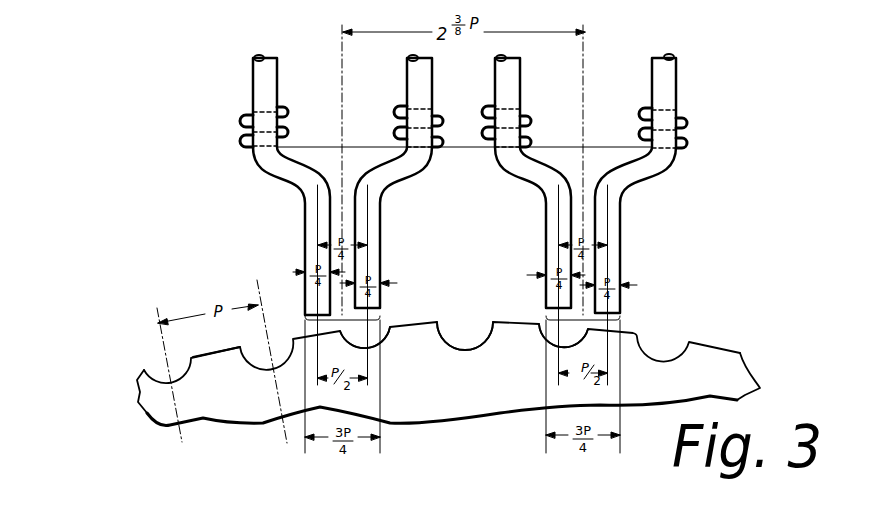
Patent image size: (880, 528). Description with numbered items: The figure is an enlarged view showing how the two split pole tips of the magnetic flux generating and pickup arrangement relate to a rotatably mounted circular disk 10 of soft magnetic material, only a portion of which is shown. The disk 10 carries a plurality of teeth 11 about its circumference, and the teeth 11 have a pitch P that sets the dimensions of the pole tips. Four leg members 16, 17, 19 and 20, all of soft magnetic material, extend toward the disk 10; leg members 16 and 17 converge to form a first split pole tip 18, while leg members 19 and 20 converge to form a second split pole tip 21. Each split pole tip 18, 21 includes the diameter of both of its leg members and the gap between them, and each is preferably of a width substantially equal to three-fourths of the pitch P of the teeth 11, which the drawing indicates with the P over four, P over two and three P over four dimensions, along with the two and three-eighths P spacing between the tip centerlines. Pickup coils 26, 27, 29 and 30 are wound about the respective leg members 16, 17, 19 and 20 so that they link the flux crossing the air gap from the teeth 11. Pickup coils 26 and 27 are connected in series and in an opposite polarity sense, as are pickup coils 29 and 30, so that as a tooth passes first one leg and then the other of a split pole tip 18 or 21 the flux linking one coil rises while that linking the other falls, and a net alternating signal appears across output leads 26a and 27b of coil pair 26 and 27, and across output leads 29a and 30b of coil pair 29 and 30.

The rotatably mounted circular disk 10 is at (705, 362).
The teeth 11 is at (208, 352).
The leg member 16 is at (273, 74).
The leg member 17 is at (418, 73).
The first split pole tip 18 is at (344, 325).
The leg member 19 is at (512, 73).
The leg member 20 is at (667, 70).
The second split pole tip 21 is at (580, 327).
The pickup coil 26 is at (288, 108).
The output lead 26a is at (246, 110).
The pickup coil 27 is at (402, 110).
The output lead 27b is at (444, 108).
The pickup coil 29 is at (529, 114).
The output lead 29a is at (485, 111).
The pickup coil 30 is at (644, 112).
The output lead 30b is at (684, 110).